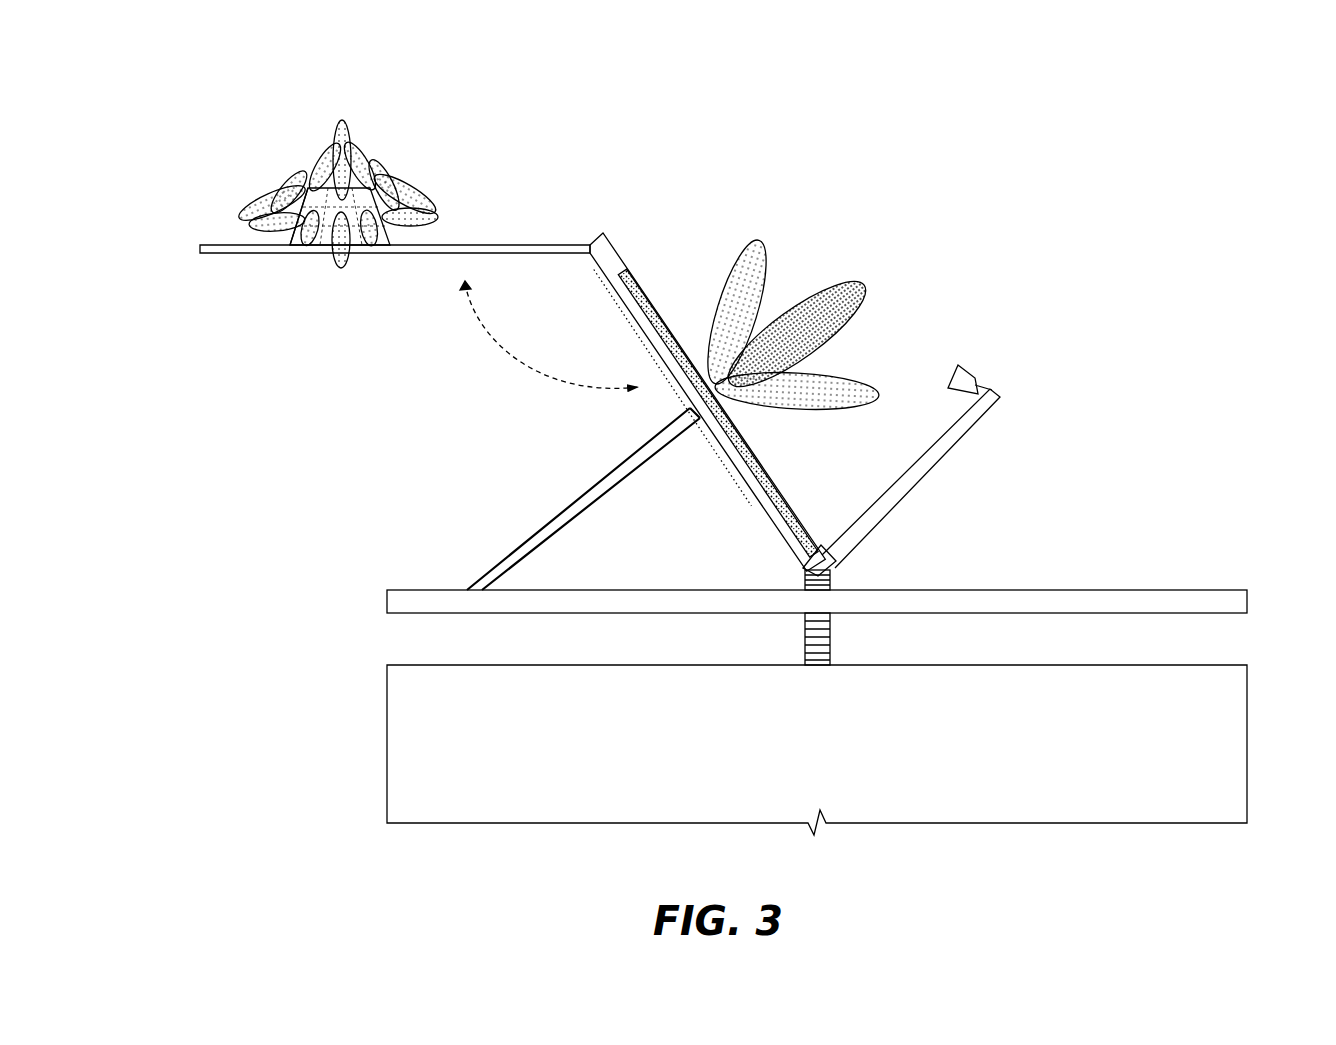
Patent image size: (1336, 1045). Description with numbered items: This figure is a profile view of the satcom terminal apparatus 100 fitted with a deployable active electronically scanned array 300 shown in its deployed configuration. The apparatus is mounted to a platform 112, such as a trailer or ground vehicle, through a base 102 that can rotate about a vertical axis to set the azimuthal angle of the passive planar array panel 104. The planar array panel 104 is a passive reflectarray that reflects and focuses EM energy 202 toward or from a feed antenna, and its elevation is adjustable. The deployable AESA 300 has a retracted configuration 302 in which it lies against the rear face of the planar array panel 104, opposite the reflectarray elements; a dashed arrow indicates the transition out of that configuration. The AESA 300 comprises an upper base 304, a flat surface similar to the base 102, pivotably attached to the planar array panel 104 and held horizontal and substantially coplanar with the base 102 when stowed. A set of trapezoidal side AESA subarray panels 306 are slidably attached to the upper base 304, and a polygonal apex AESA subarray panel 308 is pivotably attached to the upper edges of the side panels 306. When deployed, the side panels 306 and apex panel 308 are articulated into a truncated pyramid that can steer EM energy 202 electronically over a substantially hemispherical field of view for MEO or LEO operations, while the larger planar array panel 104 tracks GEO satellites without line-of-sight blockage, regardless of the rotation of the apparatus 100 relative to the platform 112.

The satcom terminal apparatus 100 is at (120, 70).
The base 102 is at (1247, 591).
The passive planar array panel 104 is at (610, 248).
The platform 112 is at (390, 768).
The EM energy 202 is at (862, 282).
The deployable active electronically scanned array 300 is at (599, 136).
The retracted configuration 302 is at (687, 410).
The upper base 304 is at (242, 254).
The side AESA subarray panels 306 is at (300, 240).
The apex AESA subarray panel 308 is at (318, 188).